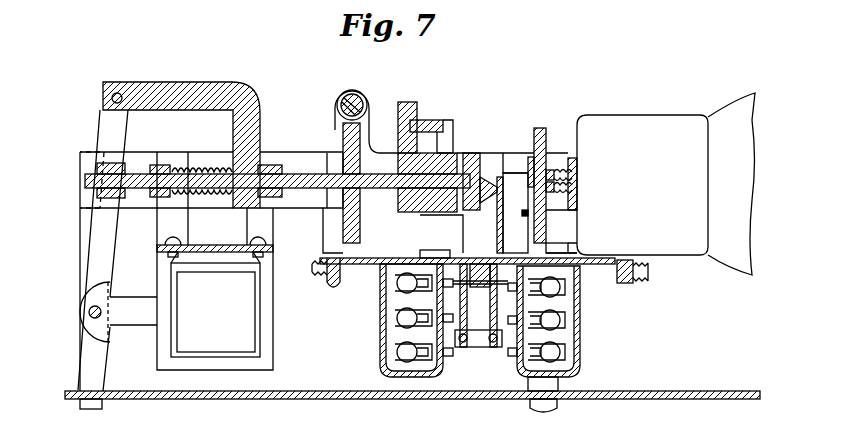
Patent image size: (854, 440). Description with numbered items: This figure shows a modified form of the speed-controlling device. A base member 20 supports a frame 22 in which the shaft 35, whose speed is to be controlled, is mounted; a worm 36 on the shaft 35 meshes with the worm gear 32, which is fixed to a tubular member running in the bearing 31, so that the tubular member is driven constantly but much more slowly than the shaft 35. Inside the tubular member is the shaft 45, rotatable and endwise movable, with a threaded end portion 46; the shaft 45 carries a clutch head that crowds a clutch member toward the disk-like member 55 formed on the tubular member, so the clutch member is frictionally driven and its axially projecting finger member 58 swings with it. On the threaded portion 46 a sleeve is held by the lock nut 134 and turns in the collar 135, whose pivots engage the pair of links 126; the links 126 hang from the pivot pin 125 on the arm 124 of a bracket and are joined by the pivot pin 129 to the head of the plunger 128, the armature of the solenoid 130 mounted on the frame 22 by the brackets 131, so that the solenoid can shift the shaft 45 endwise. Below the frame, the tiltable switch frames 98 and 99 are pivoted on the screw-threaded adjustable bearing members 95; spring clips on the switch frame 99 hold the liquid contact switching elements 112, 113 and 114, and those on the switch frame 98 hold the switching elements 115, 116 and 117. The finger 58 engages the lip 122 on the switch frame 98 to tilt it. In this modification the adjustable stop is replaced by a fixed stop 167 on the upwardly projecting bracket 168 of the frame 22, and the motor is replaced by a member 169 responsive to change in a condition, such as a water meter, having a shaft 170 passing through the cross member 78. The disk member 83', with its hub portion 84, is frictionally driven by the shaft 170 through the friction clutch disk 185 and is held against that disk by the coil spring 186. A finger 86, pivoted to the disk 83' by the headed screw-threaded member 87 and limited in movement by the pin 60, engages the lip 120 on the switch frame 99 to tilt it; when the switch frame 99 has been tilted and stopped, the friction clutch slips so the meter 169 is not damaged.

The base member 20 is at (370, 400).
The frame 22 is at (298, 152).
The bearing 31 is at (388, 153).
The worm gear 32 is at (323, 250).
The shaft 35 is at (340, 100).
The worm 36 is at (355, 92).
The shaft 45 is at (320, 186).
The threaded end portion 46 is at (142, 190).
The disk-like member 55 is at (440, 212).
The finger member 58 is at (450, 140).
The pin 60 is at (525, 237).
The cross member 78 is at (572, 158).
The disk member 83' is at (512, 119).
The hub portion 84 is at (545, 165).
The finger 86 is at (522, 215).
The headed screw-threaded member 87 is at (527, 203).
The adjustable bearing members 95 is at (650, 280).
The tiltable switch frame 98 is at (405, 258).
The tiltable switch frame 99 is at (578, 255).
The liquid contact switching element 112 is at (555, 353).
The liquid contact switching element 113 is at (555, 322).
The liquid contact switching element 114 is at (555, 289).
The liquid contact switching element 115 is at (395, 352).
The liquid contact switching element 116 is at (397, 318).
The liquid contact switching element 117 is at (400, 285).
The lip 120 is at (555, 248).
The lip 122 is at (428, 252).
The arm 124 is at (190, 90).
The pivot pin 125 is at (118, 93).
The links 126 is at (98, 258).
The plunger 128 is at (132, 325).
The pivot pin 129 is at (90, 313).
The solenoid 130 is at (235, 335).
The brackets 131 is at (250, 228).
The lock nut 134 is at (120, 168).
The collar 135 is at (95, 175).
The fixed stop 167 is at (428, 122).
The bracket 168 is at (405, 102).
The member responsive to change in a condition 169 is at (640, 120).
The shaft 170 is at (572, 175).
The friction clutch disk 185 is at (532, 157).
The coil spring 186 is at (575, 193).